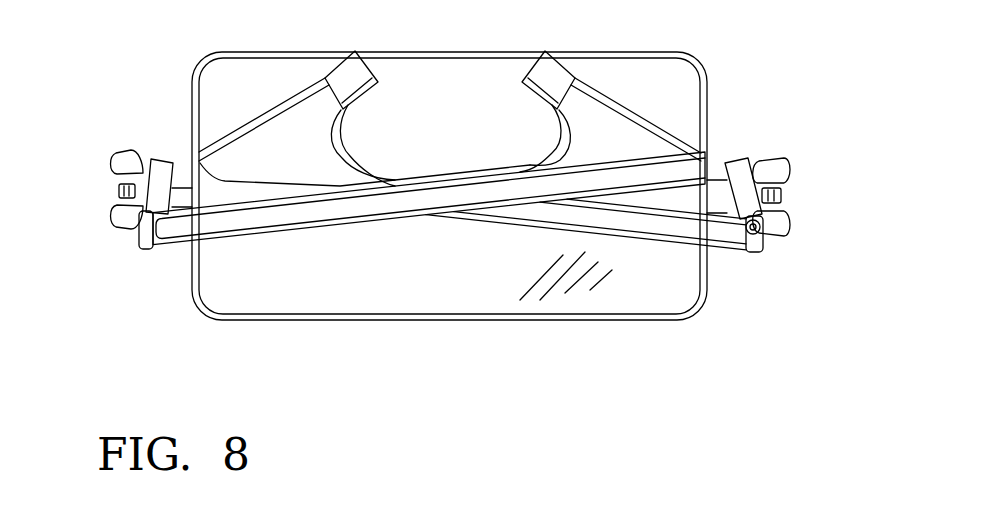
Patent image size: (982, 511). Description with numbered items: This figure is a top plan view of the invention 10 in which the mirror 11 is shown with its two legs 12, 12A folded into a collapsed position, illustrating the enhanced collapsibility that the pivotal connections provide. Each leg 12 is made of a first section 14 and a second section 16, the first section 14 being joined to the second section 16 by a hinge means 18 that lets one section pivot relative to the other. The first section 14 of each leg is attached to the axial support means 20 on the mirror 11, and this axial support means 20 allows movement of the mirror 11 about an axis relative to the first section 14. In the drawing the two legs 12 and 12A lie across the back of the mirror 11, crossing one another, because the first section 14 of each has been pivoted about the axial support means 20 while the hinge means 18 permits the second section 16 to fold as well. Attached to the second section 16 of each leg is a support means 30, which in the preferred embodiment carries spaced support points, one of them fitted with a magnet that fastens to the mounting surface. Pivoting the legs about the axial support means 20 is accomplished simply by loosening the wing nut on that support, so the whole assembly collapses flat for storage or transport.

The invention 10 is at (528, 203).
The mirror 11 is at (493, 290).
The leg 12 is at (748, 256).
The leg 12A is at (133, 249).
The first section 14 is at (160, 158).
The second section 16 is at (400, 217).
The hinge means 18 is at (762, 228).
The axial support means 20 is at (118, 196).
The support means 30 is at (325, 147).